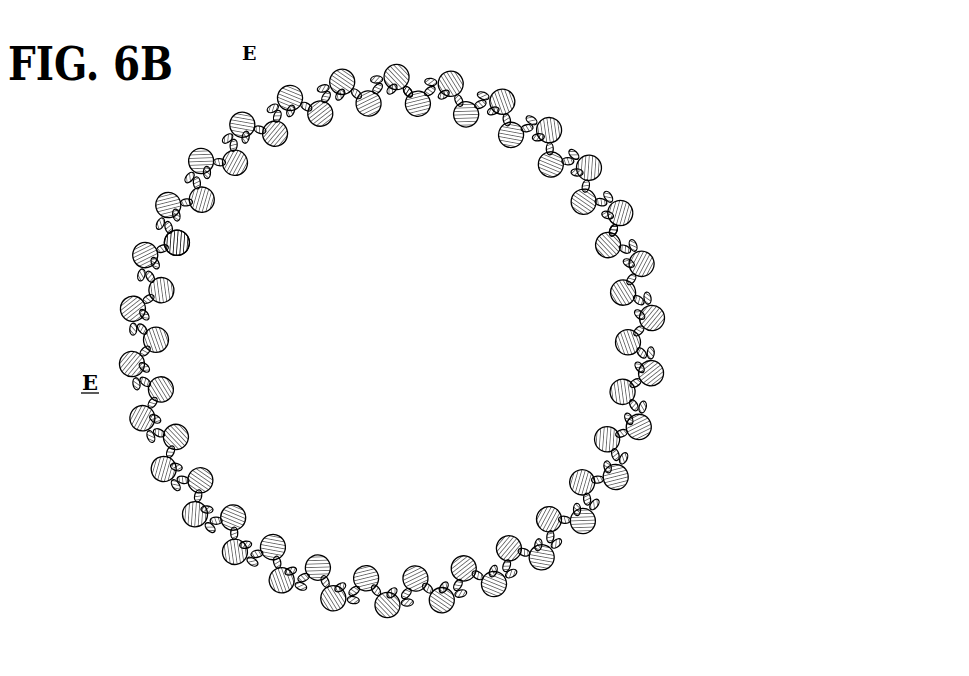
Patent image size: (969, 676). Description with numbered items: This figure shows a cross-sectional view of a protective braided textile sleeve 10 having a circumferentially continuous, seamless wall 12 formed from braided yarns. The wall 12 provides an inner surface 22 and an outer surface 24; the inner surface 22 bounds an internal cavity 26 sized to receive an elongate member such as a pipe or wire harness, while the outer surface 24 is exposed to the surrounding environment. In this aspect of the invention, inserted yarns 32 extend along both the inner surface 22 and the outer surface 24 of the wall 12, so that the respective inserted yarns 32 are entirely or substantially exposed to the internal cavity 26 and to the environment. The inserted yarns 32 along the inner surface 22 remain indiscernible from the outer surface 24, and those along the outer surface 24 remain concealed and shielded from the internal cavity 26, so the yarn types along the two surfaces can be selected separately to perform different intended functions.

The protective braided textile sleeve 10 is at (630, 140).
The wall 12 is at (167, 246).
The inner surface 22 is at (394, 102).
The outer surface 24 is at (630, 232).
The internal cavity 26 is at (406, 353).
The inserted yarns 32 is at (229, 125).